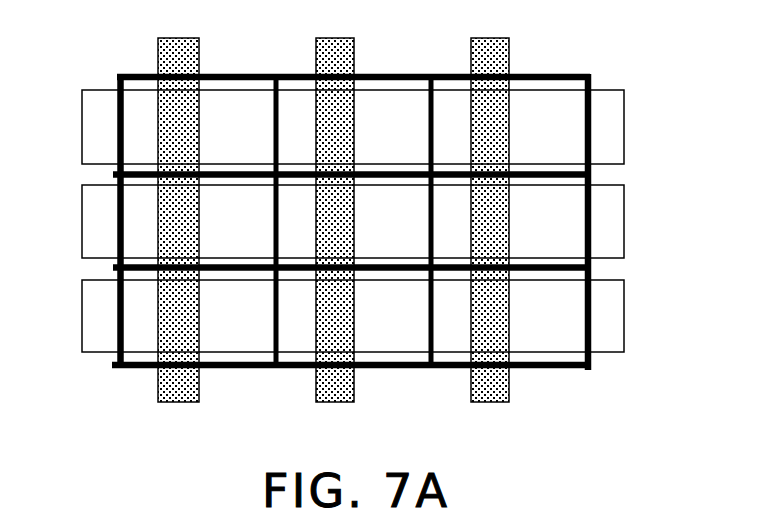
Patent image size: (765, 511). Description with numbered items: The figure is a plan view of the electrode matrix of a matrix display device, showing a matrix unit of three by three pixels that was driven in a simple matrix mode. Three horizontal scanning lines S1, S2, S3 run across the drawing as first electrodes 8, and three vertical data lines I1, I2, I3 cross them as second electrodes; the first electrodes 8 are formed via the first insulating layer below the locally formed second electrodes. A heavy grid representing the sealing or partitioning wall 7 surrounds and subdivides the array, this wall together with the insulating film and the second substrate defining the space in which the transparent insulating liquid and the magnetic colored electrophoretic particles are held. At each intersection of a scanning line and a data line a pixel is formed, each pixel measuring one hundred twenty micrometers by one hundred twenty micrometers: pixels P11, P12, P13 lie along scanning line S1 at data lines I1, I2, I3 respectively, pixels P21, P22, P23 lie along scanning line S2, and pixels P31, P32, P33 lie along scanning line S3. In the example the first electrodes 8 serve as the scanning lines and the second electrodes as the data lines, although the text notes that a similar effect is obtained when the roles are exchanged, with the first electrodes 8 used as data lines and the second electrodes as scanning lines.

The sealing or partitioning wall 7 is at (590, 75).
The first electrode 8 is at (359, 98).
The data line I1 is at (182, 52).
The data line I2 is at (337, 50).
The data line I3 is at (490, 50).
The scanning line S1 is at (92, 140).
The scanning line S2 is at (92, 237).
The scanning line S3 is at (92, 322).
The pixel P11 is at (140, 107).
The pixel P12 is at (397, 100).
The pixel P13 is at (545, 98).
The pixel P21 is at (132, 220).
The pixel P22 is at (390, 243).
The pixel P23 is at (573, 228).
The pixel P31 is at (140, 338).
The pixel P32 is at (297, 337).
The pixel P33 is at (542, 340).